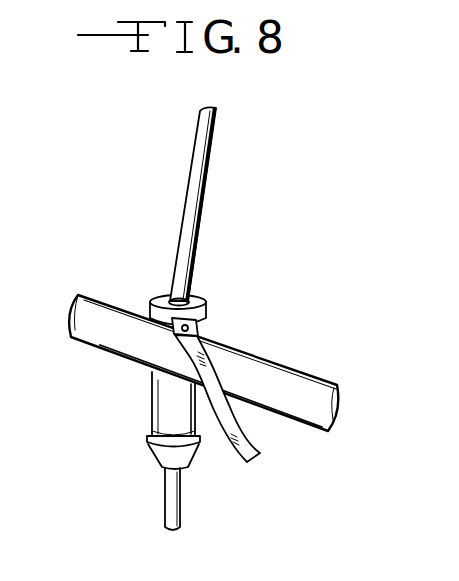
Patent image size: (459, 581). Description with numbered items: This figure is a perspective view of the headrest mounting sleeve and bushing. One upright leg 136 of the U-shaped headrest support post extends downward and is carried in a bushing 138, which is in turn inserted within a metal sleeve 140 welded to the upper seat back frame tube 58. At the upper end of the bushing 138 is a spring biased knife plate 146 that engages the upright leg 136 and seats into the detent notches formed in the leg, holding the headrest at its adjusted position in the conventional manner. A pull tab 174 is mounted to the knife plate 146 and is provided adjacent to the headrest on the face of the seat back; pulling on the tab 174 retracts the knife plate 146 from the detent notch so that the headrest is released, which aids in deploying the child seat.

The upper seat back frame tube 58 is at (307, 370).
The upright leg 136 is at (195, 147).
The bushing 138 is at (204, 311).
The metal sleeve 140 is at (150, 410).
The knife plate 146 is at (204, 328).
The pull tab 174 is at (263, 454).